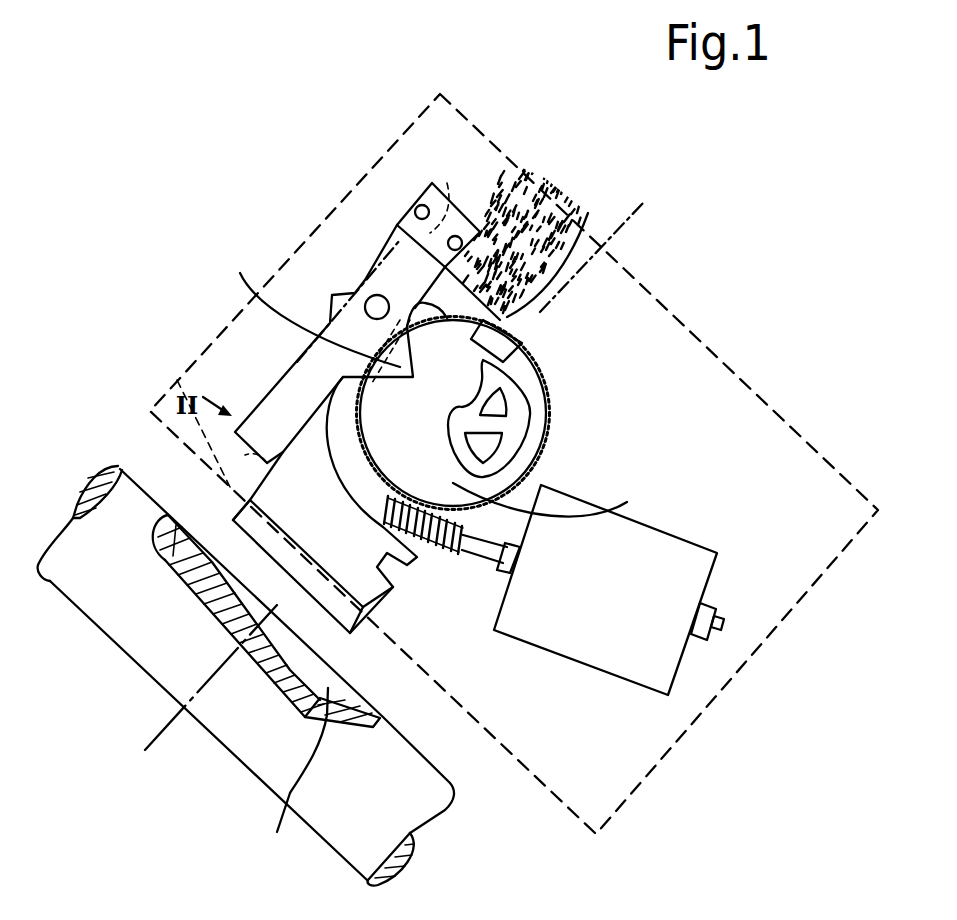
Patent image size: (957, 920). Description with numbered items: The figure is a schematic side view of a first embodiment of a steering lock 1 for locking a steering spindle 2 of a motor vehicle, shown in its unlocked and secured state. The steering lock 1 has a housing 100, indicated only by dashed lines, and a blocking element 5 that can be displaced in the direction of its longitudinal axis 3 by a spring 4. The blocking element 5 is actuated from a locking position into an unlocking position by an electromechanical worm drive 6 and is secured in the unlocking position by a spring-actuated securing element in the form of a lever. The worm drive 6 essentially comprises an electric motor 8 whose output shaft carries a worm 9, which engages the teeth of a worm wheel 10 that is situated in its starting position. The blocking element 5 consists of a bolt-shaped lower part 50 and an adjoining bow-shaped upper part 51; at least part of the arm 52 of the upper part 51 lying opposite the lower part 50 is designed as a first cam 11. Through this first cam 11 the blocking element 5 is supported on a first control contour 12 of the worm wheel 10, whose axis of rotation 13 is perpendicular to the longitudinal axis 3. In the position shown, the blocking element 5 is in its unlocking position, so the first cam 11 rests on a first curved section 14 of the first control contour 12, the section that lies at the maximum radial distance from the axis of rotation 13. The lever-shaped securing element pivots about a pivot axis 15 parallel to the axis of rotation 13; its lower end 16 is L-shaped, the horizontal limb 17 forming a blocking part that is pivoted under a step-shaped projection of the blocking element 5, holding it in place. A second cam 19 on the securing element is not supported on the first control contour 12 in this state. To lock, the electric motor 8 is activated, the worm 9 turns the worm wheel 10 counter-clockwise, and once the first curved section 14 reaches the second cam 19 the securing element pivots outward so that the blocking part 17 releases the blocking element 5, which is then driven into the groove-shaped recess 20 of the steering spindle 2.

The steering lock 1 is at (398, 114).
The steering spindle 2 is at (270, 763).
The longitudinal axis 3 is at (160, 725).
The spring 4 is at (498, 154).
The blocking element 5 is at (373, 636).
The electromechanical worm drive 6 is at (560, 471).
The electric motor 8 is at (663, 551).
The worm 9 is at (467, 542).
The worm wheel 10 is at (556, 528).
The first cam 11 is at (520, 352).
The first control contour 12 is at (512, 416).
The axis of rotation 13 is at (453, 413).
The first curved section 14 is at (530, 410).
The pivot axis 15 is at (377, 294).
The lower end 16 is at (268, 400).
The horizontal limb 17 is at (230, 440).
The second cam 19 is at (307, 304).
The groove-shaped recess 20 is at (297, 777).
The bolt-shaped lower part 50 is at (236, 504).
The bow-shaped upper part 51 is at (432, 228).
The arm 52 is at (556, 246).
The housing 100 is at (678, 310).